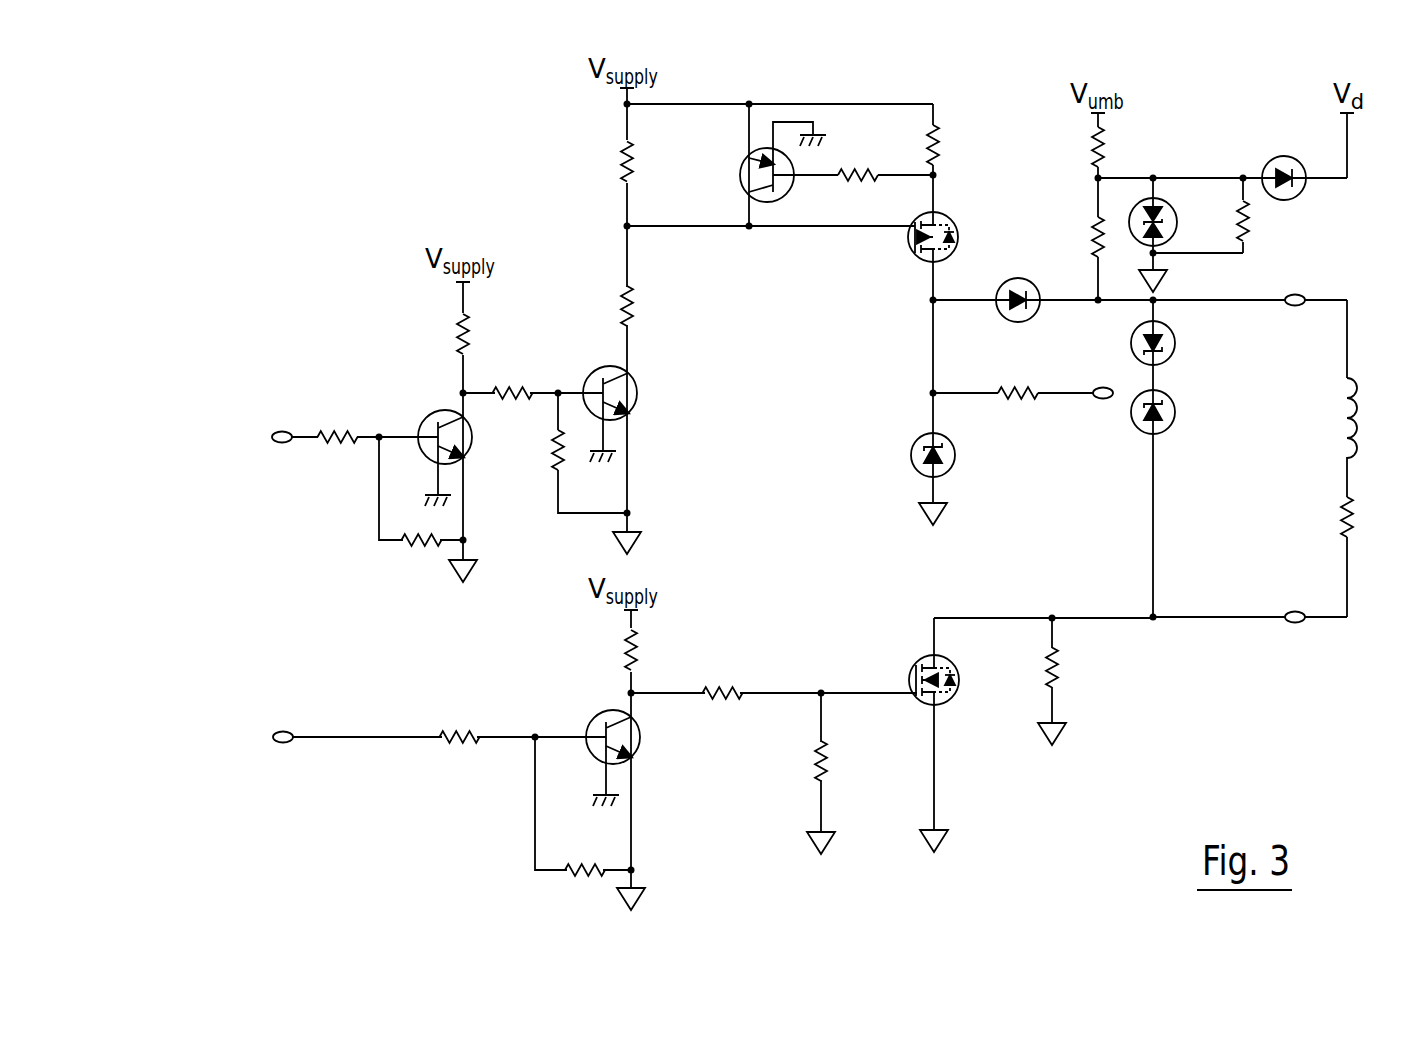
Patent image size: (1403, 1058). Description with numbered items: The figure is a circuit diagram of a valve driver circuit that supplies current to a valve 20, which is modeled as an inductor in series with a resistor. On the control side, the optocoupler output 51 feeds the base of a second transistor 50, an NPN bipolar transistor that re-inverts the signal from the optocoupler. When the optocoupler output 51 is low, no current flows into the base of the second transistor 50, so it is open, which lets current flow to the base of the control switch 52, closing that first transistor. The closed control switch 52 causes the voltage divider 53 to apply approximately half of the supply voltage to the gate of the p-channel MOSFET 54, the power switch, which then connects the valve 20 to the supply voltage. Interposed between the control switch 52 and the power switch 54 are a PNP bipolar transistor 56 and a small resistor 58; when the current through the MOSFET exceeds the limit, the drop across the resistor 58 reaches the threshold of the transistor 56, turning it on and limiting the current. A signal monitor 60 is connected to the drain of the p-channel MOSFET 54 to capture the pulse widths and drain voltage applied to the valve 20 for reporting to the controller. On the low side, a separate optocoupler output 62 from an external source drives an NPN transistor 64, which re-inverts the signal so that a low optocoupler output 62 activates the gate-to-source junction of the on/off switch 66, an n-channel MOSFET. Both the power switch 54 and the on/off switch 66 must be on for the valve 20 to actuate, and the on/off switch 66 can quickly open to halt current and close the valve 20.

The valve 20 is at (1325, 472).
The second transistor 50 is at (430, 405).
The optocoupler output 51 is at (207, 405).
The control switch 52 is at (650, 393).
The voltage divider 53 is at (607, 158).
The p-channel MOSFET 54 is at (903, 258).
The PNP bipolar transistor 56 is at (730, 175).
The resistor 58 is at (957, 120).
The signal monitor 60 is at (1098, 412).
The optocoupler output 62 is at (210, 700).
The transistor 64 is at (600, 705).
The on/off switch 66 is at (917, 650).